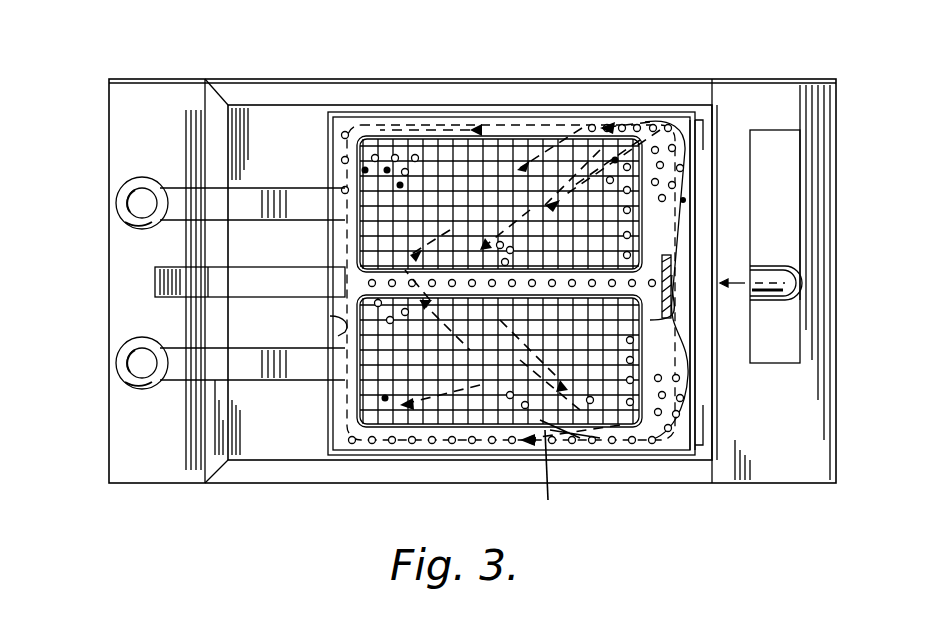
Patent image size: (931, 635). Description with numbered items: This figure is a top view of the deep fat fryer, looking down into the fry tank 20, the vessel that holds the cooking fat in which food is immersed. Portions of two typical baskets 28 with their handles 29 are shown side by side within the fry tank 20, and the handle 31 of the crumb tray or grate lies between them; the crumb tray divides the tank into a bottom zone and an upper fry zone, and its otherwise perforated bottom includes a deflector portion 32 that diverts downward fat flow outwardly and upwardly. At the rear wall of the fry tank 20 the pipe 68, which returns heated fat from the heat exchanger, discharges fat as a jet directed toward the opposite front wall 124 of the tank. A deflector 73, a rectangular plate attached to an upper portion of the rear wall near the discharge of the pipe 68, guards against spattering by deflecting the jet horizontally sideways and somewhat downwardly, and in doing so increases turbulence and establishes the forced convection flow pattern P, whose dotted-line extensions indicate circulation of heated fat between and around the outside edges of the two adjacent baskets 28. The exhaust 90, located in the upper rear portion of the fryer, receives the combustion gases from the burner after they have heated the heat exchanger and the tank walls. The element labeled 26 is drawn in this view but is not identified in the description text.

The gas generator grids 20 is at (357, 115).
The housing cover plate 26 is at (299, 132).
The gas flow arrows 28 is at (545, 133).
The lifting eye arms 29 is at (193, 212).
The center bar 31 is at (205, 270).
The tray 32 is at (668, 355).
The connector 68 is at (768, 270).
The seal strip 73 is at (660, 330).
The side box 90 is at (778, 135).
The pouch tab 124 is at (330, 318).
The pouch P is at (678, 232).